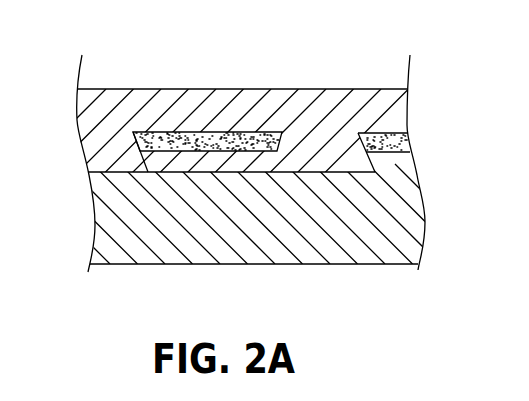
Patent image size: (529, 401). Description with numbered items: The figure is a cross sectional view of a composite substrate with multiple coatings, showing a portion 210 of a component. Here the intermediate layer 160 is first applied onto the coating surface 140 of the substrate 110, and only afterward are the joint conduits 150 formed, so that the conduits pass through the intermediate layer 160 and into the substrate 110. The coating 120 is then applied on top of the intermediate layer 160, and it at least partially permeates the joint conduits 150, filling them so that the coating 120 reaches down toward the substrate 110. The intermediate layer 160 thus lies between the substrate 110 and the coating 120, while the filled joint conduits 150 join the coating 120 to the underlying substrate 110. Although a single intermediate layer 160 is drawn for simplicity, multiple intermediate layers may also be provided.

The portion 210 is at (108, 57).
The substrate 110 is at (328, 246).
The coating 120 is at (317, 118).
The coating surface 140 is at (200, 132).
The joint conduits 150 is at (115, 153).
The intermediate layer 160 is at (412, 133).